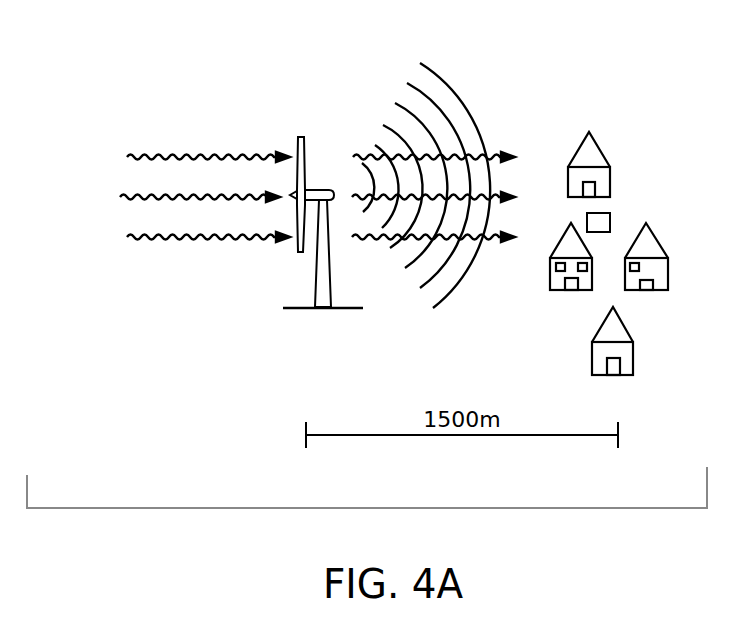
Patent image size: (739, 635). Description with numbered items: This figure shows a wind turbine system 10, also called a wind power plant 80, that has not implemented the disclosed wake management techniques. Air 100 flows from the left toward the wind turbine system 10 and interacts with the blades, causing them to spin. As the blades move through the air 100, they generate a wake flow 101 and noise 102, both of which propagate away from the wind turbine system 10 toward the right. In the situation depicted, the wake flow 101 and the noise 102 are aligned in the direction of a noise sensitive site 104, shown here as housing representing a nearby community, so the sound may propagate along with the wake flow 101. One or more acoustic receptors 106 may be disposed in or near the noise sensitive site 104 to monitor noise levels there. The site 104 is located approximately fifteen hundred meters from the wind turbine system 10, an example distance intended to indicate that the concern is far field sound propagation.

The air 100 is at (183, 137).
The wind turbine system 10 is at (325, 179).
The wind power plant 80 is at (316, 140).
The wake flow 101 is at (377, 240).
The noise 102 is at (403, 95).
The noise sensitive site 104 is at (602, 120).
The acoustic receptor 106 is at (611, 213).